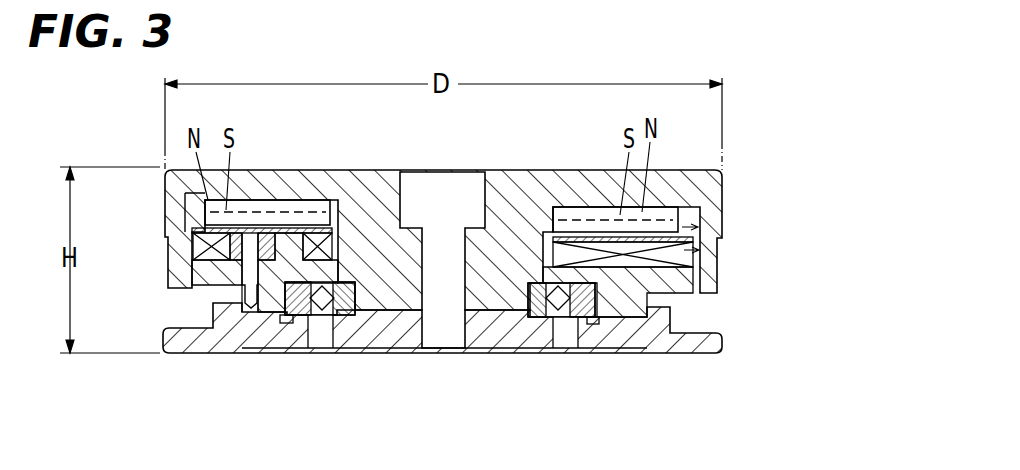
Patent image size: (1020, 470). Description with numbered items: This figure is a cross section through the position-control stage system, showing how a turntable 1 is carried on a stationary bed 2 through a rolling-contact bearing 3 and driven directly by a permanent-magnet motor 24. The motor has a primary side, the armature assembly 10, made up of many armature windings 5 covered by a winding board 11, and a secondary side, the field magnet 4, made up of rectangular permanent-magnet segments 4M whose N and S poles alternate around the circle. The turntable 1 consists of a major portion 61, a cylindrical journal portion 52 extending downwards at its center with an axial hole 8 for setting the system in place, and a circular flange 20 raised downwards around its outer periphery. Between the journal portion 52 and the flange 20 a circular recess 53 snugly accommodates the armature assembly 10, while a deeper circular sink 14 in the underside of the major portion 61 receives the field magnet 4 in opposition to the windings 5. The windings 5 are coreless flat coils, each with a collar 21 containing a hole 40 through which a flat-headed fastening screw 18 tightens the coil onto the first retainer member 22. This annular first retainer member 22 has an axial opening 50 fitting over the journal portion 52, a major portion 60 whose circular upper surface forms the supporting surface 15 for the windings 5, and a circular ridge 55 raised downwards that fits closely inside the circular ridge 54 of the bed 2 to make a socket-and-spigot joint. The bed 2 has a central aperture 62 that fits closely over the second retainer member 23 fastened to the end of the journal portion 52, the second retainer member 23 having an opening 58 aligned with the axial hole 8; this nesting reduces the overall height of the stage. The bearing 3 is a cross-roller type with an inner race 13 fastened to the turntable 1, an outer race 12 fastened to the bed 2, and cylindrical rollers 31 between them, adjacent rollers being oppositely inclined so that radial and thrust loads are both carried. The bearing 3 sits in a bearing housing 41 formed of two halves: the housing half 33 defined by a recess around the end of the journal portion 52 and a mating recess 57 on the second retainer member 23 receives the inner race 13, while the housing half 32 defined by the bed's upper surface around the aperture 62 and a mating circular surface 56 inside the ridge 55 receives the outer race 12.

The turntable 1 is at (508, 193).
The stationary bed 2 is at (243, 352).
The rolling-contact bearing 3 is at (558, 340).
The field magnet 4 is at (222, 203).
The permanent-magnet segments 4M is at (690, 174).
The armature windings 5 is at (208, 246).
The axial hole 8 is at (426, 193).
The armature assembly 10 is at (717, 230).
The winding board 11 is at (176, 165).
The outer race 12 is at (588, 345).
The inner race 13 is at (527, 320).
The circular sink 14 is at (581, 212).
The supporting surface 15 is at (623, 340).
The flat-headed fastening screw 18 is at (254, 238).
The circular flange 20 is at (708, 282).
The collar 21 is at (265, 255).
The first retainer member 22 is at (700, 268).
The second retainer member 23 is at (386, 340).
The permanent-magnet motor 24 is at (723, 216).
The roller 31 is at (569, 340).
The circular housing half 32 is at (599, 203).
The circular housing half 33 is at (541, 193).
The hole 40 is at (250, 245).
The bearing housing 41 is at (294, 320).
The axial opening 50 is at (350, 250).
The cylindrical journal portion 52 is at (380, 260).
The circular recess 53 is at (657, 200).
The circular ridge 54 is at (213, 340).
The circular ridge 55 is at (261, 340).
The mating circular surface 56 is at (563, 220).
The mating recess 57 is at (332, 317).
The opening 58 is at (423, 325).
The major portion 60 is at (238, 266).
The major portion 61 is at (591, 183).
The aperture 62 is at (308, 335).